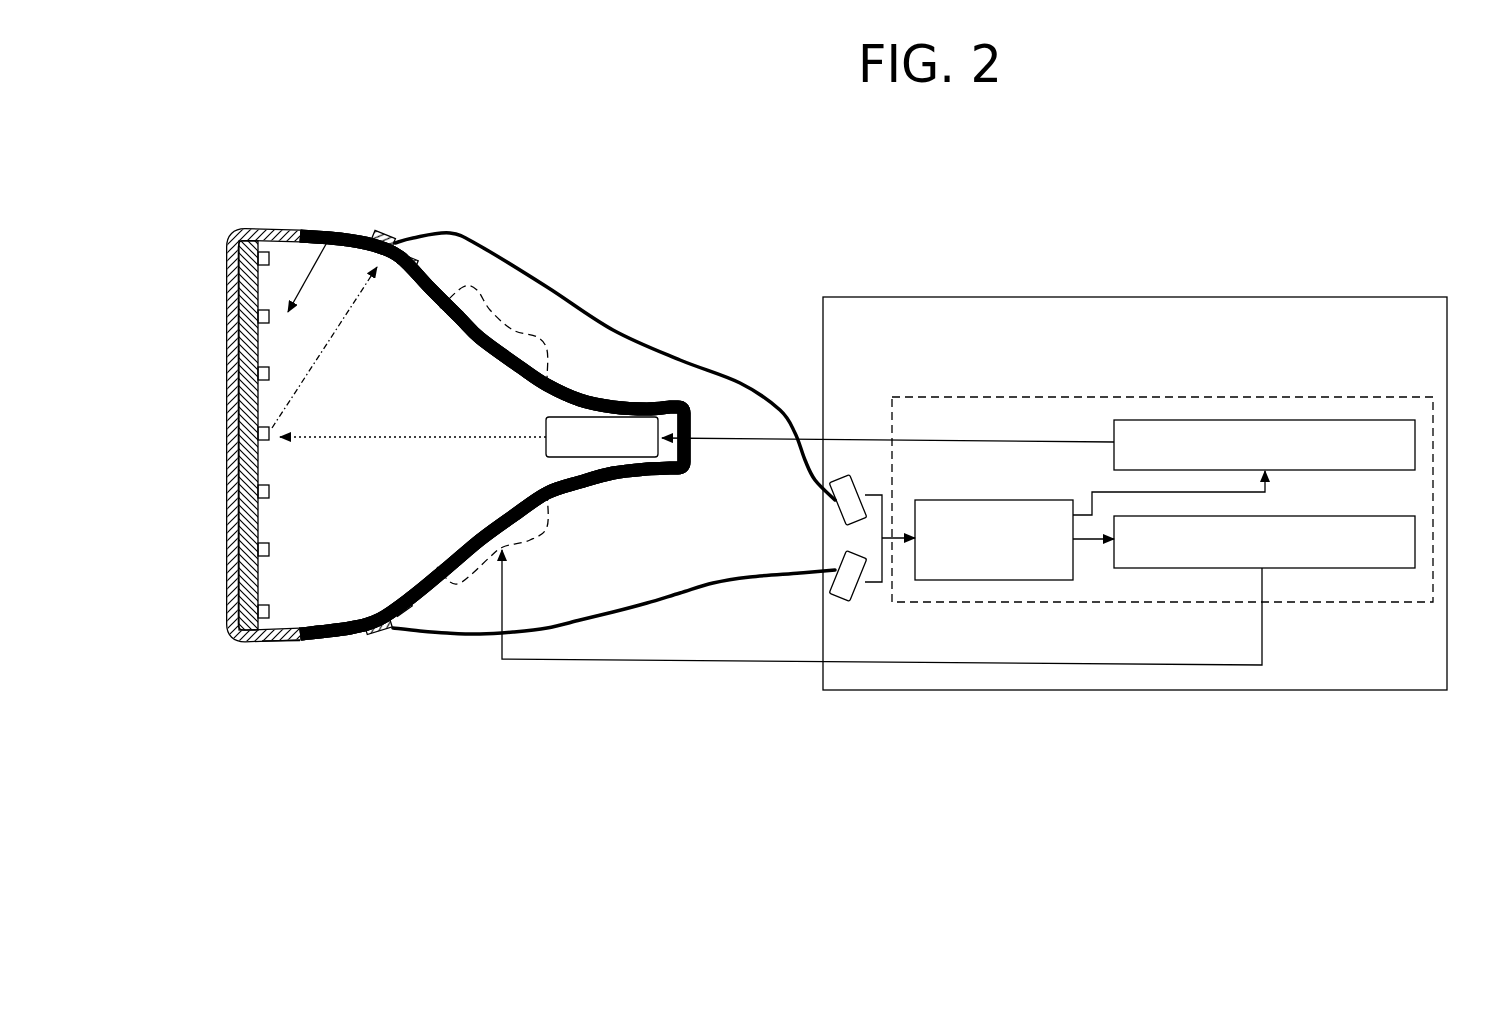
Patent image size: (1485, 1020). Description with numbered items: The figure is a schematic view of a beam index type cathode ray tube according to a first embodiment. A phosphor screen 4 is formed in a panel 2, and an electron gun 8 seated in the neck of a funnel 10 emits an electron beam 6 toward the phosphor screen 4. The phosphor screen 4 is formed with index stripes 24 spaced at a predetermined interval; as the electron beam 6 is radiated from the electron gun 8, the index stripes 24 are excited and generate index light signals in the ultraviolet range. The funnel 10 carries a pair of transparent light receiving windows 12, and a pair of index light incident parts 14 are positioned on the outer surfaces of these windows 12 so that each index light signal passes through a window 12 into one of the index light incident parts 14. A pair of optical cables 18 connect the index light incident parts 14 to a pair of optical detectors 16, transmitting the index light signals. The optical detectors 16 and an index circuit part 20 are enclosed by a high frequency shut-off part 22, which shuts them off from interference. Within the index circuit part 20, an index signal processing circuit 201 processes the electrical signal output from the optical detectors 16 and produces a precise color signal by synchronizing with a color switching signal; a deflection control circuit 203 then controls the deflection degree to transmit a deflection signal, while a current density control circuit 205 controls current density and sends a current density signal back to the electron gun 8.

The panel 2 is at (226, 296).
The phosphor screen 4 is at (330, 237).
The electron beam 6 is at (410, 440).
The electron gun 8 is at (617, 427).
The funnel 10 is at (312, 641).
The transparent light receiving window 12 is at (375, 632).
The index light incident part 14 is at (387, 232).
The optical detector 16 is at (828, 517).
The optical cable 18 is at (766, 393).
The index circuit part 20 is at (1182, 397).
The high frequency shut-off part 22 is at (1123, 297).
The index stripe 24 is at (269, 548).
The index signal processing circuit 201 is at (985, 581).
The deflection control circuit 203 is at (1335, 569).
The current density control circuit 205 is at (1327, 420).